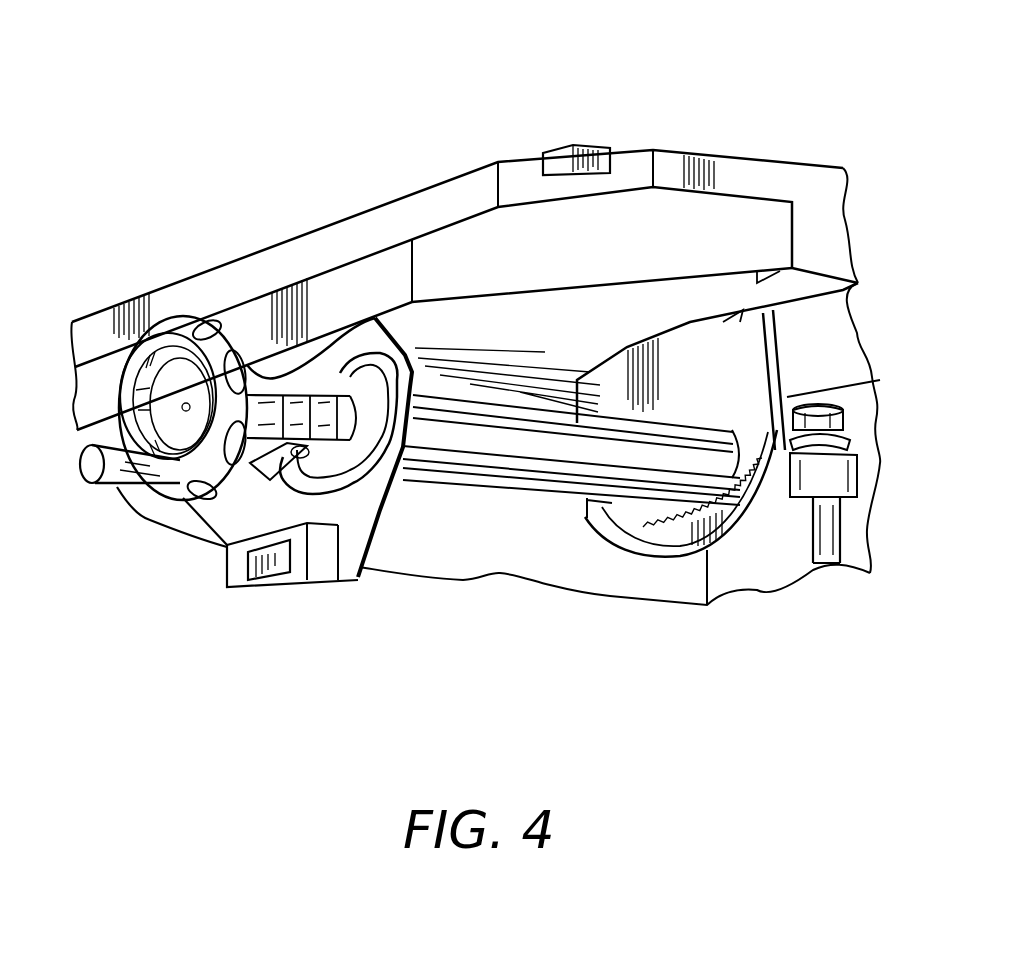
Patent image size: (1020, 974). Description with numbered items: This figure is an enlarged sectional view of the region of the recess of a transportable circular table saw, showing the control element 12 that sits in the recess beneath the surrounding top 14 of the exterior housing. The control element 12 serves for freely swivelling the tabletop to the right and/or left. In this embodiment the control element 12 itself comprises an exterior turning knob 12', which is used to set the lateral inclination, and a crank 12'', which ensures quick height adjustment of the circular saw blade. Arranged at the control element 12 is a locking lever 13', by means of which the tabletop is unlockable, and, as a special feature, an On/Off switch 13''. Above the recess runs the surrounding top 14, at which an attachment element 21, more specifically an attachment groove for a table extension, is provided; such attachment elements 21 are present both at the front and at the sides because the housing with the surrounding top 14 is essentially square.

The control element 12 is at (200, 306).
The exterior turning knob 12' is at (184, 324).
The crank 12'' is at (127, 547).
The locking lever 13' is at (264, 495).
The On/Off switch 13'' is at (314, 613).
The surrounding top 14 is at (405, 215).
The attachment element 21 is at (607, 147).